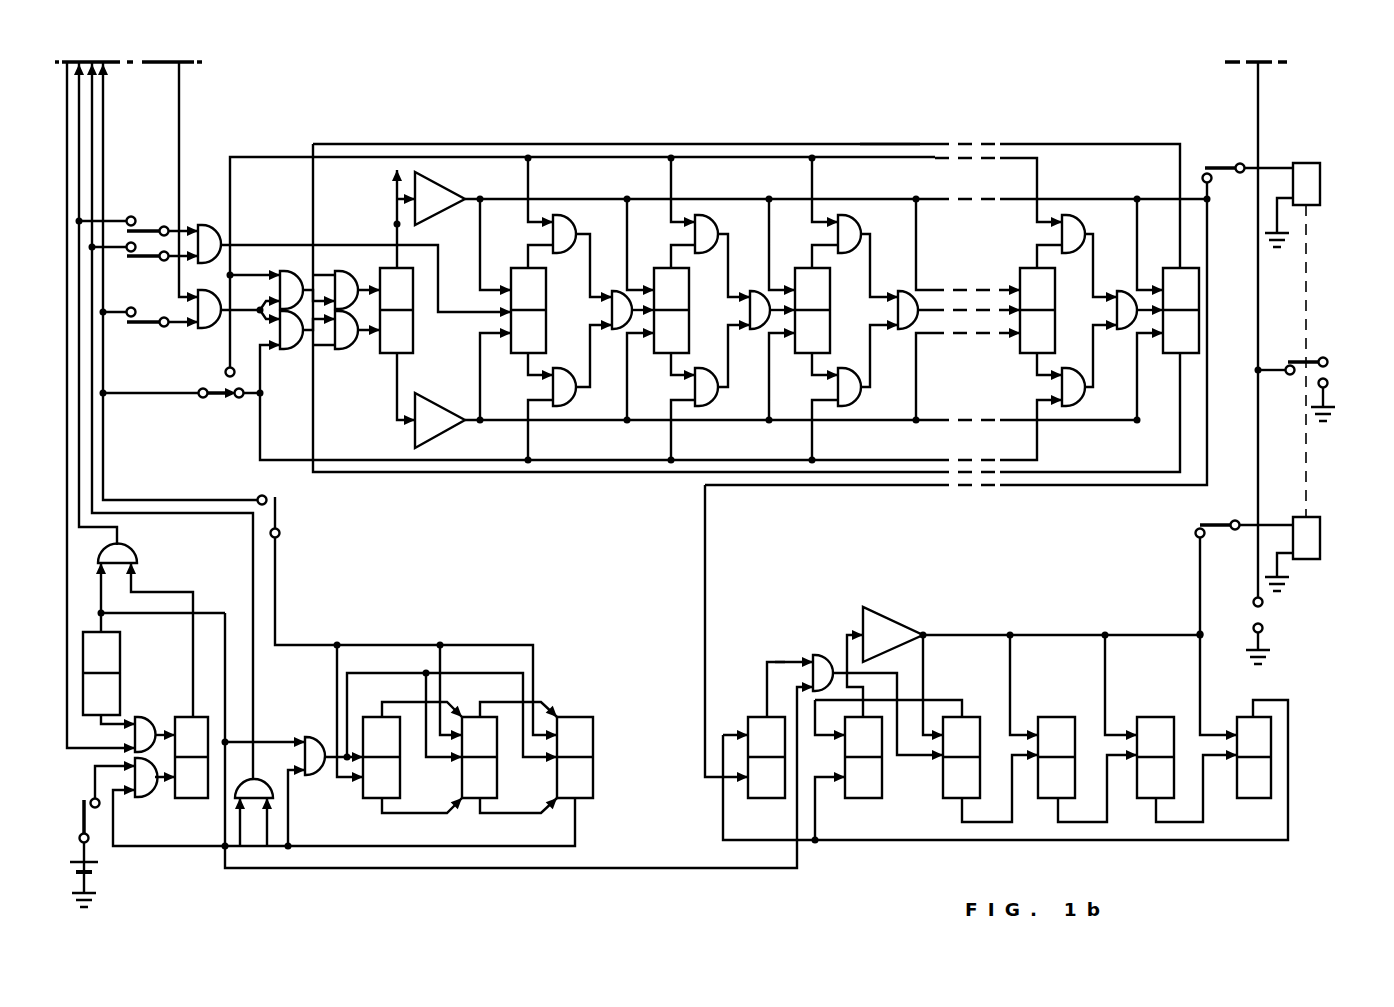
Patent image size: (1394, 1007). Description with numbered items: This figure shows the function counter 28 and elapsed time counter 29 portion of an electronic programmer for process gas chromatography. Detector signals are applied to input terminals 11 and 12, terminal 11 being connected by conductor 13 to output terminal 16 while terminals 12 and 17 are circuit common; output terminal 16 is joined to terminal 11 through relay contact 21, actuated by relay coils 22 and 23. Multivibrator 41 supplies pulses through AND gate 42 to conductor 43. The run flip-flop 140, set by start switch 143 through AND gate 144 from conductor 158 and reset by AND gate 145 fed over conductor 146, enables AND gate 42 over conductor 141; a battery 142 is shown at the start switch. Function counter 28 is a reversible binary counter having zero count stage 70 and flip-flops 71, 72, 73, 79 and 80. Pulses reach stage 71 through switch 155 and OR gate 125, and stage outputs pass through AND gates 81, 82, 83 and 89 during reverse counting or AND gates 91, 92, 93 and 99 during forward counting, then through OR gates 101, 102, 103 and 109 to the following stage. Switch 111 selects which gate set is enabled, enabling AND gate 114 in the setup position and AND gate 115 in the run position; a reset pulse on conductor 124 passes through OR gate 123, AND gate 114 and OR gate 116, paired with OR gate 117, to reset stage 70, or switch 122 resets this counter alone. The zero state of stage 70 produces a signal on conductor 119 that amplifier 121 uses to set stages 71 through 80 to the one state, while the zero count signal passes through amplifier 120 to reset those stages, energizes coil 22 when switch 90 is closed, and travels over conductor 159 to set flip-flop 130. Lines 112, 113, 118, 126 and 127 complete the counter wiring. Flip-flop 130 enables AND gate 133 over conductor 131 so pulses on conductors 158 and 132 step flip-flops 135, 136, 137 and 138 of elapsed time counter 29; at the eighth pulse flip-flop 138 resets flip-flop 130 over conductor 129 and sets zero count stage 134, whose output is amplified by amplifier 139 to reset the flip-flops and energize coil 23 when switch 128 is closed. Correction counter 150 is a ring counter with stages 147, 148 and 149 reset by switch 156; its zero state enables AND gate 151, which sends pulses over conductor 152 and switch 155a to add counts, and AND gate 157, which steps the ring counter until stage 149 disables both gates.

The input terminal 11 is at (1254, 600).
The input terminal 12 is at (1256, 633).
The conductor 13 is at (1258, 88).
The output terminal 16 is at (1328, 358).
The terminal 17 is at (1328, 395).
The relay contact 21 is at (1290, 360).
The relay coil 22 is at (1320, 178).
The relay coil 23 is at (1320, 538).
The function counter 28 is at (730, 136).
The elapsed time counter 29 is at (1040, 610).
The multivibrator 41 is at (122, 692).
The AND gate 42 is at (134, 548).
The conductor 43 is at (79, 122).
The flip-flop 70 is at (413, 343).
The flip-flop 71 is at (520, 355).
The flip-flop 72 is at (663, 355).
The flip-flop 73 is at (805, 355).
The flip-flop 79 is at (1028, 355).
The flip-flop 80 is at (1163, 355).
The AND gate 81 is at (578, 223).
The AND gate 82 is at (718, 223).
The AND gate 83 is at (861, 223).
The AND gate 89 is at (1085, 223).
The switch 90 is at (1228, 164).
The AND gate 91 is at (578, 400).
The AND gate 92 is at (718, 400).
The AND gate 93 is at (861, 400).
The AND gate 99 is at (1085, 400).
The OR gate 101 is at (621, 291).
The OR gate 102 is at (760, 291).
The OR gate 103 is at (906, 291).
The OR gate 109 is at (1125, 291).
The switch 111 is at (210, 400).
The line 112 is at (232, 200).
The line 113 is at (258, 430).
The AND gate 114 is at (296, 272).
The AND gate 115 is at (296, 350).
The OR gate 116 is at (340, 258).
The OR gate 117 is at (352, 350).
The line 118 is at (394, 224).
The conductor 119 is at (396, 400).
The amplifier 120 is at (446, 187).
The amplifier 121 is at (441, 404).
The switch 122 is at (146, 330).
The OR gate 123 is at (220, 328).
The conductor 124 is at (179, 121).
The OR gate 125 is at (213, 225).
The line 126 is at (530, 472).
The line 127 is at (872, 144).
The switch 128 is at (1213, 522).
The conductor 129 is at (726, 804).
The flip-flop 130 is at (767, 800).
The conductor 131 is at (780, 660).
The conductor 132 is at (640, 868).
The AND gate 133 is at (815, 654).
The zero count stage 134 is at (863, 800).
The flip-flop 135 is at (940, 778).
The flip-flop 136 is at (1050, 800).
The flip-flop 137 is at (1150, 800).
The flip-flop 138 is at (1253, 800).
The amplifier 139 is at (904, 618).
The run flip-flop 140 is at (192, 800).
The conductor 141 is at (190, 632).
The battery 142 is at (88, 876).
The start switch 143 is at (84, 812).
The AND gate 144 is at (150, 798).
The AND gate 145 is at (155, 717).
The conductor 146 is at (67, 100).
The ring counter stage 147 is at (402, 783).
The ring counter stage 148 is at (500, 783).
The ring counter stage 149 is at (594, 783).
The correction counter 150 is at (582, 632).
The AND gate 151 is at (282, 768).
The conductor 152 is at (92, 146).
The switch 155 is at (144, 227).
The switch 155a is at (146, 265).
The switch 156 is at (277, 512).
The AND gate 157 is at (322, 737).
The conductor 158 is at (212, 614).
The conductor 159 is at (858, 485).